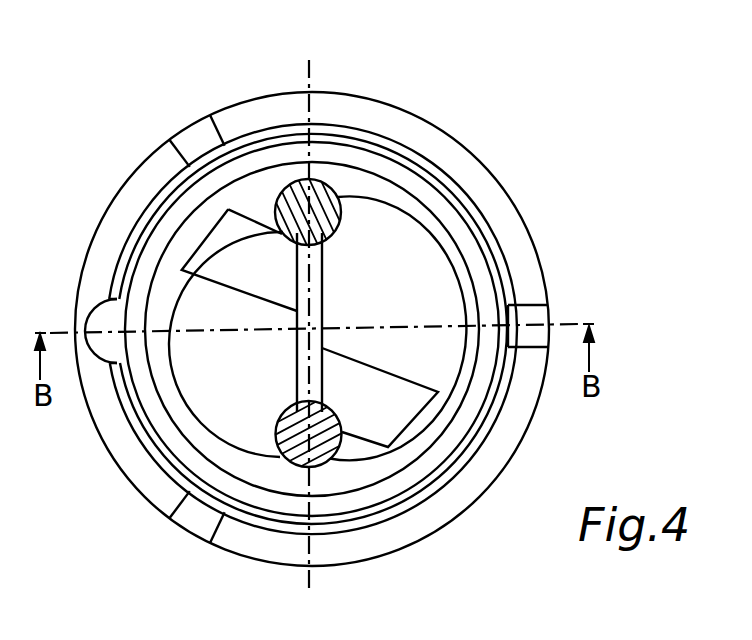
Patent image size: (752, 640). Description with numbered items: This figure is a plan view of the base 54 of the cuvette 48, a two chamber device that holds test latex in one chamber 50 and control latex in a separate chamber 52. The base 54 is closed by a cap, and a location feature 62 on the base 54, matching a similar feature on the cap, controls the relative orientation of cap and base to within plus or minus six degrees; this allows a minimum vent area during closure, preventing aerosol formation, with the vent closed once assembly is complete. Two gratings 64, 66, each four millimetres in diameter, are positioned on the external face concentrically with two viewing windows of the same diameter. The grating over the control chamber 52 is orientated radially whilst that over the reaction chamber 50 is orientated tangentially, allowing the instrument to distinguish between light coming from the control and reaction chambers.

The cuvette 48 is at (360, 94).
The chamber 50 is at (180, 380).
The chamber 52 is at (412, 255).
The base 54 is at (546, 266).
The location feature 62 is at (88, 302).
The grating 64 is at (339, 198).
The grating 66 is at (298, 466).